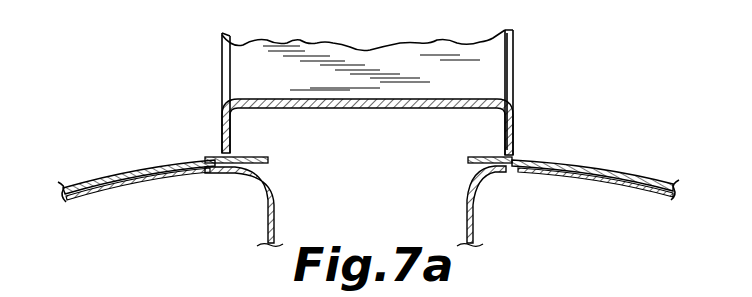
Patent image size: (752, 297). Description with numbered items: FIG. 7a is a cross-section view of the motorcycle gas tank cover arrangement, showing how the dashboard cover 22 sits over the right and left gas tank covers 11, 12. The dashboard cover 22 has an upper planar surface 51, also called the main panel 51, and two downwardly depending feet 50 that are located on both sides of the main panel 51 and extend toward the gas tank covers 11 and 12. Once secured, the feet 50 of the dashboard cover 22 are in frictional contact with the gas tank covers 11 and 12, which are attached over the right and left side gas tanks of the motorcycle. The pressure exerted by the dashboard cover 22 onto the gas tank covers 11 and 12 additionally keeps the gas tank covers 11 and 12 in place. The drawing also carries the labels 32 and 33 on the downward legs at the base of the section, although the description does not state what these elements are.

The gas tank cover 11 is at (100, 178).
The gas tank cover 12 is at (585, 163).
The dashboard cover 22 is at (515, 87).
The left shell leg 32 is at (280, 218).
The right shell leg 33 is at (467, 218).
The downwardly depending feet 50 is at (497, 130).
The upper planar surface 51 is at (387, 63).